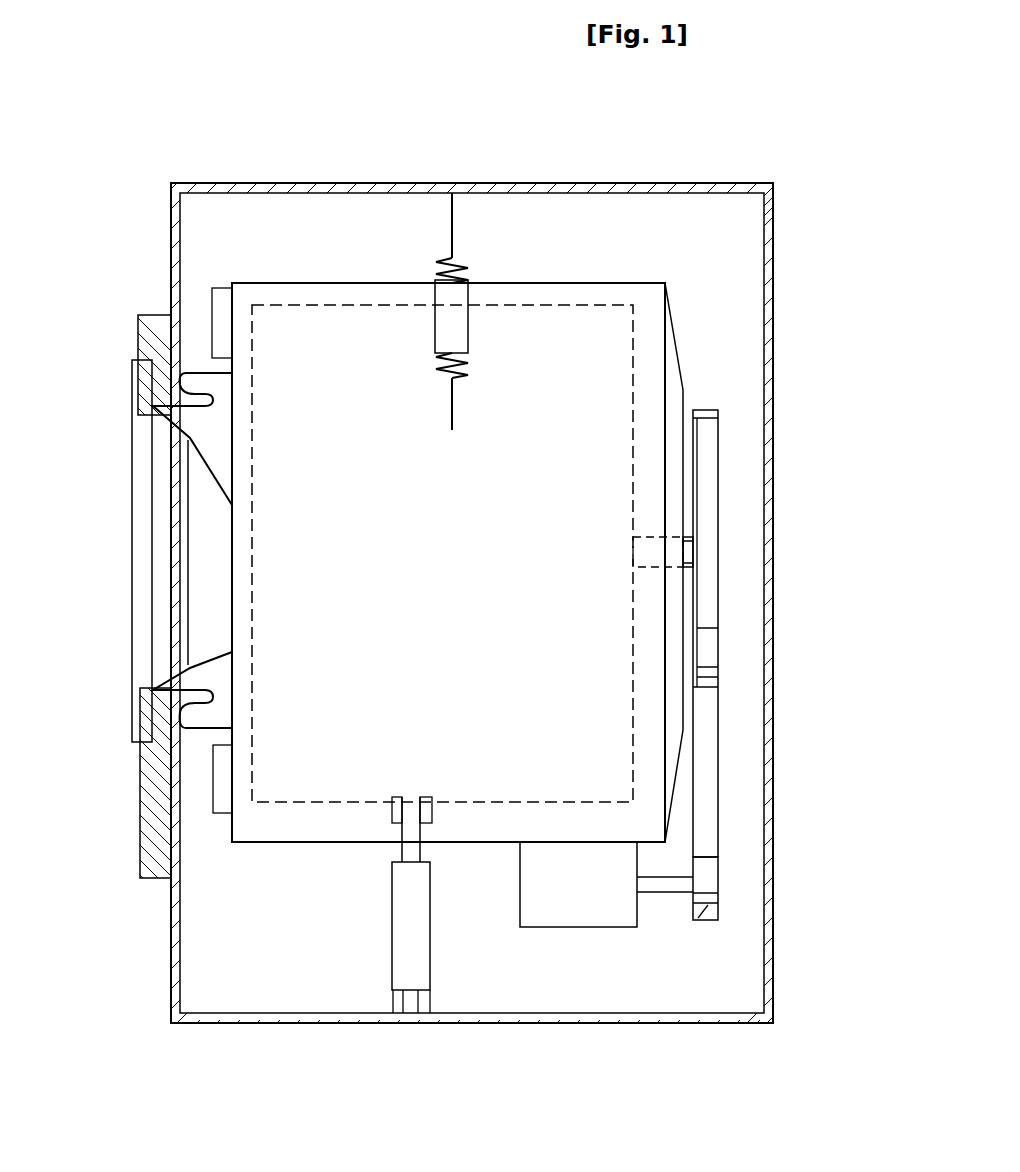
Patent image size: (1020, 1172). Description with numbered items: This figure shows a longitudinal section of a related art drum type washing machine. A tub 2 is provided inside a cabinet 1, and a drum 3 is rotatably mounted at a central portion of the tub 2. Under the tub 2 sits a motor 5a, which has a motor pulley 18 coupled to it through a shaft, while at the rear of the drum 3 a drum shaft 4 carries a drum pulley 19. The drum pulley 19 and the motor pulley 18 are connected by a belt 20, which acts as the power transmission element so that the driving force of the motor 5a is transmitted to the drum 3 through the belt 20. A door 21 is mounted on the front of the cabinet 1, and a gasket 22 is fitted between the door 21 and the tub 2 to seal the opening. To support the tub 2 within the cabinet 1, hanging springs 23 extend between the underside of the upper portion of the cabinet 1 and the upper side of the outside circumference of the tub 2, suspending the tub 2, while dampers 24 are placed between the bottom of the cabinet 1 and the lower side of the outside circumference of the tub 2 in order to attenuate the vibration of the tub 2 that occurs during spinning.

The cabinet 1 is at (255, 183).
The tub 2 is at (575, 283).
The drum 3 is at (350, 305).
The shaft 4 is at (696, 553).
The motor 5a is at (572, 907).
The motor pulley 18 is at (712, 882).
The drum pulley 19 is at (708, 500).
The belt 20 is at (712, 778).
The door 21 is at (140, 548).
The gasket 22 is at (200, 727).
The hanging springs 23 is at (455, 265).
The dampers 24 is at (403, 943).